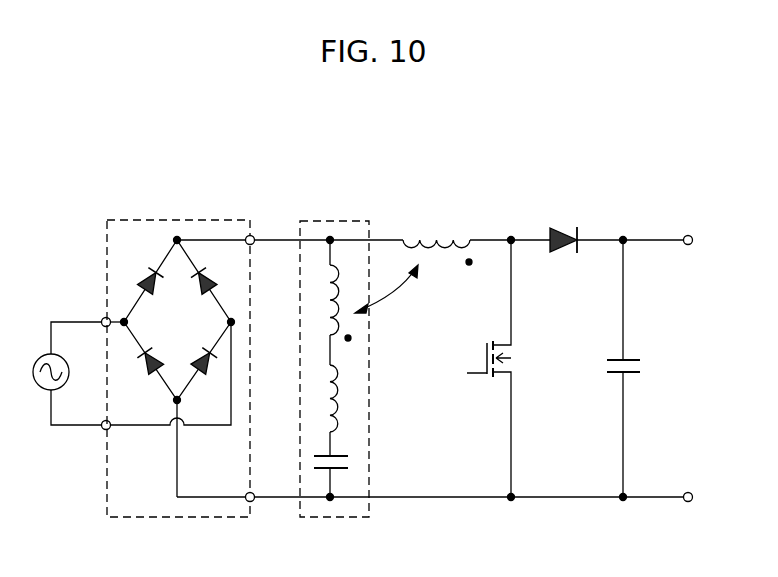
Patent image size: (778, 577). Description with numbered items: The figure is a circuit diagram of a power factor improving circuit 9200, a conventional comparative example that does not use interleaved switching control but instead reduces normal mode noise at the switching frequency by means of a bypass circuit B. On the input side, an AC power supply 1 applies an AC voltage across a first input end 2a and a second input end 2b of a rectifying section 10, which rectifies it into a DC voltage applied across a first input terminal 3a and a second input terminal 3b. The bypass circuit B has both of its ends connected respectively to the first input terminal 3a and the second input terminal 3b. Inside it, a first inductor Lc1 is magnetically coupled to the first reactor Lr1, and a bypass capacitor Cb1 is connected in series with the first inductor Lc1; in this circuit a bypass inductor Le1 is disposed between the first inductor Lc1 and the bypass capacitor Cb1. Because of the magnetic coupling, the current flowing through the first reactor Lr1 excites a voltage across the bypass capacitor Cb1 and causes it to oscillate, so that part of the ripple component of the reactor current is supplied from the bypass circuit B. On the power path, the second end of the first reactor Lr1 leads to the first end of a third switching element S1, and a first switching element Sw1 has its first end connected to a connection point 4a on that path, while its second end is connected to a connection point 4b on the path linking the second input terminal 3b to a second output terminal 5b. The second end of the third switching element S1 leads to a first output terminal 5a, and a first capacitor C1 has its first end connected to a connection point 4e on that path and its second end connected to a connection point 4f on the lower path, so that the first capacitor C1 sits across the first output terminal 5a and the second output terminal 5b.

The power factor improving circuit 9200 is at (96, 141).
The AC power supply 1 is at (51, 354).
The first input end 2a is at (106, 322).
The second input end 2b is at (106, 425).
The rectifying section 10 is at (181, 220).
The first input terminal 3a is at (250, 240).
The second input terminal 3b is at (250, 497).
The bypass circuit B is at (332, 221).
The first inductor Lc1 is at (314, 303).
The bypass inductor Le1 is at (363, 398).
The bypass capacitor Cb1 is at (356, 463).
The first reactor Lr1 is at (437, 240).
The connection point 4a is at (511, 240).
The connection point 4b is at (511, 497).
The connection point 4e is at (623, 240).
The connection point 4f is at (623, 497).
The first output terminal 5a is at (688, 240).
The second output terminal 5b is at (688, 497).
The third switching element S1 is at (558, 228).
The first switching element Sw1 is at (515, 368).
The first capacitor C1 is at (642, 368).